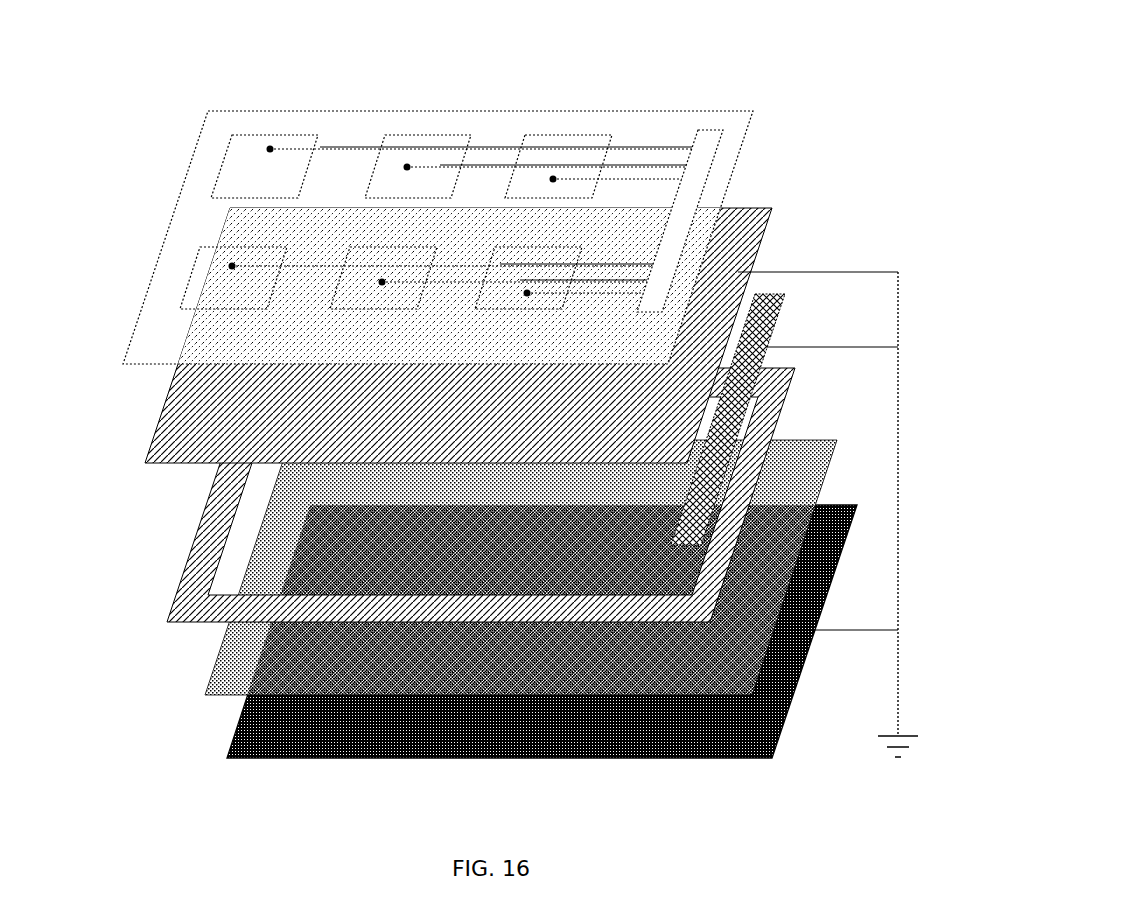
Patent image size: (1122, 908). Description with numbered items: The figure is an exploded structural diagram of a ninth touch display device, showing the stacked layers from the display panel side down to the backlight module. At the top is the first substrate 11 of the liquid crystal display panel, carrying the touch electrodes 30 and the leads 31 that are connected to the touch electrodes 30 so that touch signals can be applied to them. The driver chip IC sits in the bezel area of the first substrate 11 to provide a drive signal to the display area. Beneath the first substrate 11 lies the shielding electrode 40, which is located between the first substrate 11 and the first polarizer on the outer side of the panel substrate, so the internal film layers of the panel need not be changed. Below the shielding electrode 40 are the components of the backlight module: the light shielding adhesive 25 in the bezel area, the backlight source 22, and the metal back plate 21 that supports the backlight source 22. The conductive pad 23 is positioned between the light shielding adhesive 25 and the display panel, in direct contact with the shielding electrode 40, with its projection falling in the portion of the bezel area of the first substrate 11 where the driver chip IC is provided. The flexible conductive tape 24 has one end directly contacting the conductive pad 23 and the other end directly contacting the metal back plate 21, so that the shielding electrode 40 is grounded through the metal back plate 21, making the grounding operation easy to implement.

The first substrate 11 is at (152, 314).
The touch electrodes 30 is at (249, 148).
The leads 31 is at (495, 148).
The driver chip IC is at (710, 148).
The shielding electrode 40 is at (163, 417).
The conductive pad 23 is at (775, 300).
The flexible conductive tape 24 is at (898, 462).
The light shielding adhesive 25 is at (172, 589).
The backlight source 22 is at (212, 673).
The metal back plate 21 is at (232, 738).